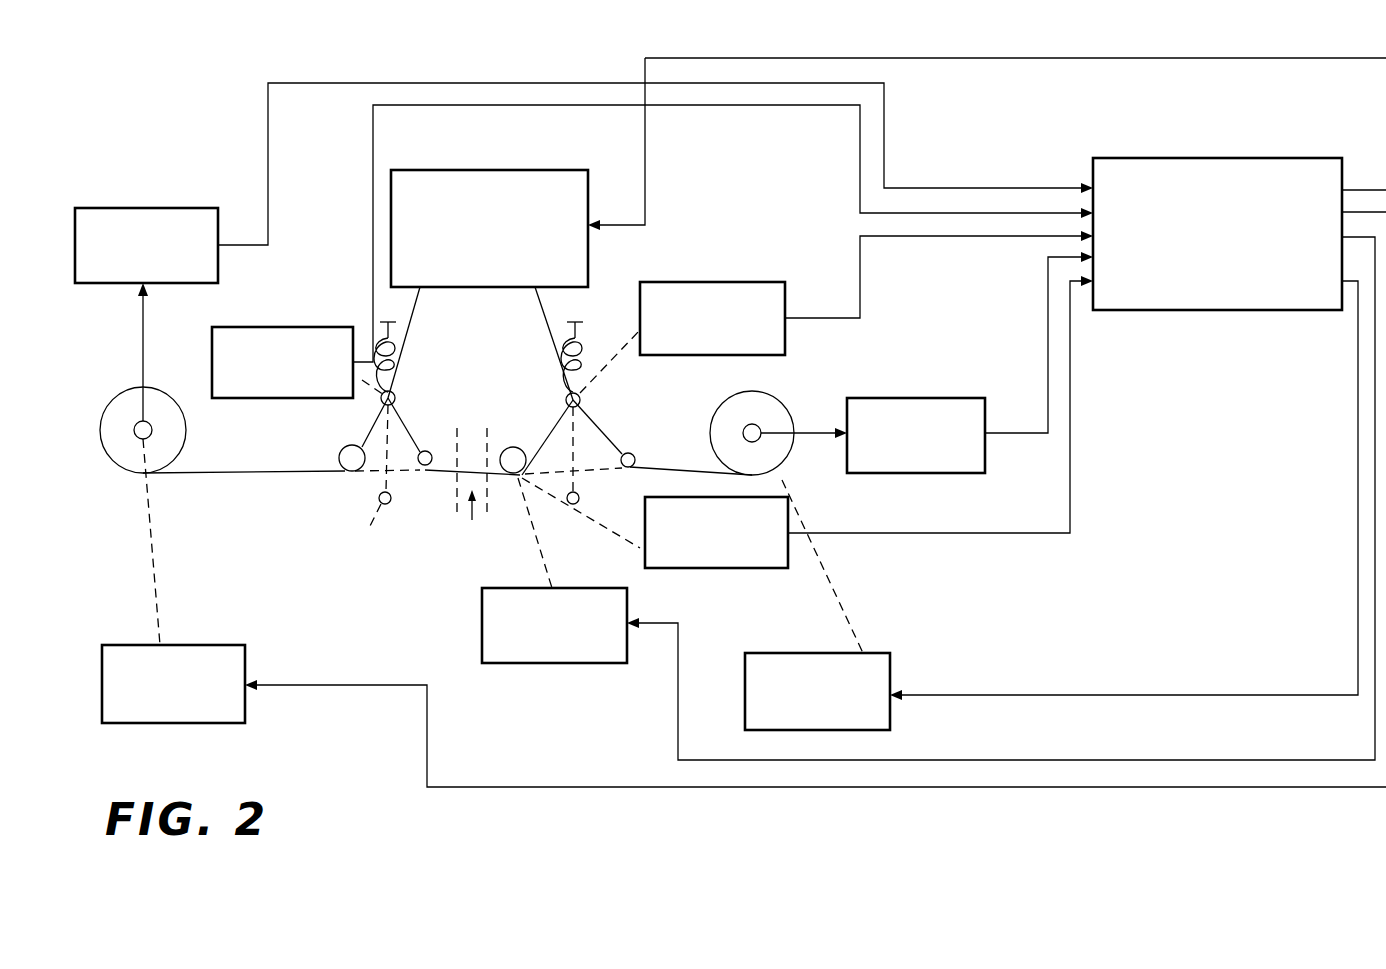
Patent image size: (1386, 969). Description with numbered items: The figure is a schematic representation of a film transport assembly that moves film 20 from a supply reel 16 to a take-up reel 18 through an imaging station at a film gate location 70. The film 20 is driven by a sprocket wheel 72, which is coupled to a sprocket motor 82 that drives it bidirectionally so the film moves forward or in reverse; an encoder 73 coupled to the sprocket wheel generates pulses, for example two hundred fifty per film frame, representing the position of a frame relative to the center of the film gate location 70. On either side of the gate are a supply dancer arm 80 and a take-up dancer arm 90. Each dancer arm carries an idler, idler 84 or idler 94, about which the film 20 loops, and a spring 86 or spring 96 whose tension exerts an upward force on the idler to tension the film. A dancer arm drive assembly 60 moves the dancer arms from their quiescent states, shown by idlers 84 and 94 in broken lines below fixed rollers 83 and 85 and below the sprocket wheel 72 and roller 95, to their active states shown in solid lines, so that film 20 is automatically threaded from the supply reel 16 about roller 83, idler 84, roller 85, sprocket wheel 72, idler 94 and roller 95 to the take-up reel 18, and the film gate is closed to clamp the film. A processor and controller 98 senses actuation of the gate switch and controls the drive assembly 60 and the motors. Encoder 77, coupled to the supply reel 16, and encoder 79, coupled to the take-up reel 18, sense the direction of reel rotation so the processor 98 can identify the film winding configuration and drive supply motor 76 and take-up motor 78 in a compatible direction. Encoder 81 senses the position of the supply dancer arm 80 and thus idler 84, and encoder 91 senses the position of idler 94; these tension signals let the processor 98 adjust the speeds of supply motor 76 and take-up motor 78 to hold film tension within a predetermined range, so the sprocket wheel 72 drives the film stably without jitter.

The supply reel 16 is at (125, 400).
The take-up reel 18 is at (772, 408).
The film 20 is at (286, 481).
The dancer arm drive assembly 60 is at (508, 170).
The film gate location 70 is at (471, 493).
The sprocket wheel 72 is at (516, 447).
The encoder 73 is at (748, 568).
The supply motor 76 is at (250, 668).
The encoder 77 is at (163, 208).
The take-up motor 78 is at (892, 670).
The encoder 79 is at (905, 473).
The supply dancer arm 80 is at (412, 362).
The encoder 81 is at (254, 327).
The sprocket motor 82 is at (630, 605).
The roller 83 is at (346, 445).
The idler 84 is at (395, 400).
The roller 85 is at (424, 450).
The spring 86 is at (393, 350).
The take-up dancer arm 90 is at (598, 328).
The encoder 91 is at (720, 282).
The idler 94 is at (582, 402).
The roller 95 is at (634, 455).
The spring 96 is at (560, 352).
The processor and controller 98 is at (1183, 312).